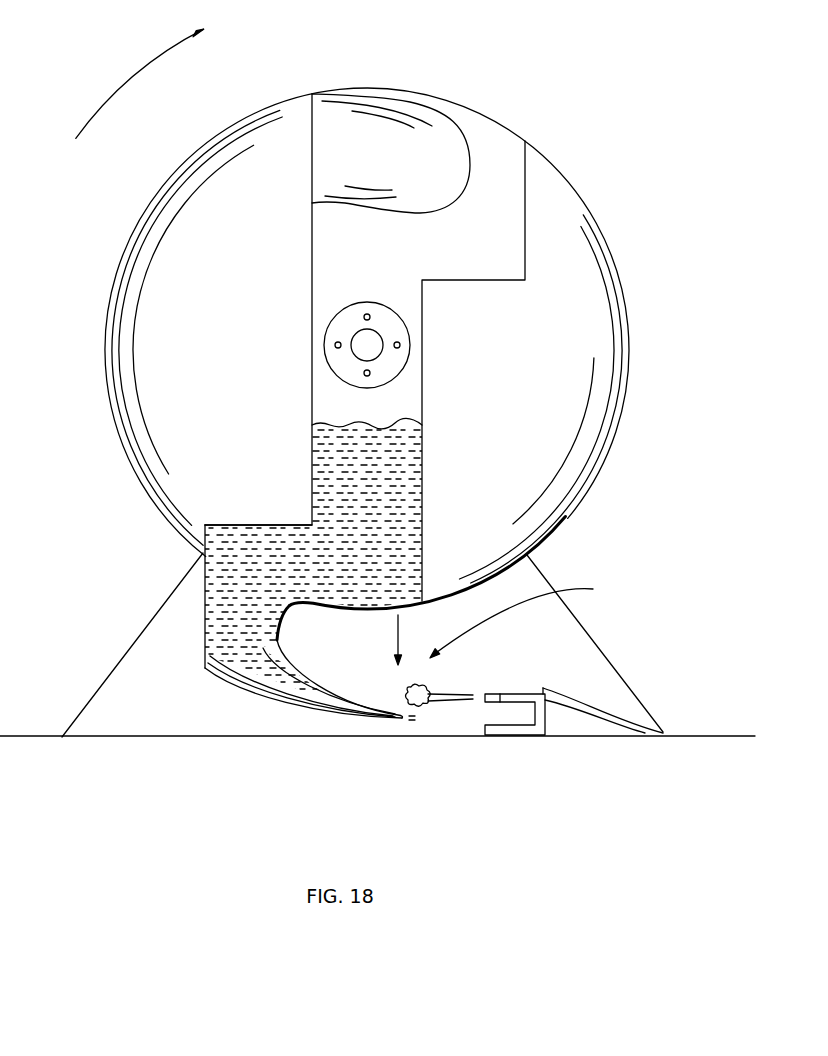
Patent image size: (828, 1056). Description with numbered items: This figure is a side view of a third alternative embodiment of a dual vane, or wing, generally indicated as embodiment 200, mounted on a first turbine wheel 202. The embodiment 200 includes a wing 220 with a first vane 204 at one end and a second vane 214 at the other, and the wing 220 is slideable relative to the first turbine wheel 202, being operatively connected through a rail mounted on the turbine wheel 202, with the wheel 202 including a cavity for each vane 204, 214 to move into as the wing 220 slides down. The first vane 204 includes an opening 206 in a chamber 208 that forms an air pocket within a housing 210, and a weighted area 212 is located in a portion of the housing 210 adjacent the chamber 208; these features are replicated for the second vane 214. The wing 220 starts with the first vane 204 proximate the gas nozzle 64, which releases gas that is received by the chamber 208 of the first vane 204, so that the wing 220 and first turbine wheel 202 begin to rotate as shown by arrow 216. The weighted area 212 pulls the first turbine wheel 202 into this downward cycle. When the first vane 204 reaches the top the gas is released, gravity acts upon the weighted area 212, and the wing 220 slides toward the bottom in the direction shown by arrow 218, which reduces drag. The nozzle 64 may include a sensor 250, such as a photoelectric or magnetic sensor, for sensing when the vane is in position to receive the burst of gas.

The dual vane embodiment 200 is at (620, 178).
The first turbine wheel 202 is at (493, 398).
The first vane 204 is at (258, 695).
The opening 206 is at (530, 618).
The chamber 208 is at (355, 652).
The housing 210 is at (262, 631).
The weighted area 212 is at (318, 543).
The second vane 214 is at (457, 104).
The direction of rotation arrow 216 is at (136, 74).
The wing sliding direction arrow 218 is at (400, 633).
The wing 220 is at (338, 460).
The sensor 250 is at (497, 692).
The gas nozzle 64 is at (543, 688).